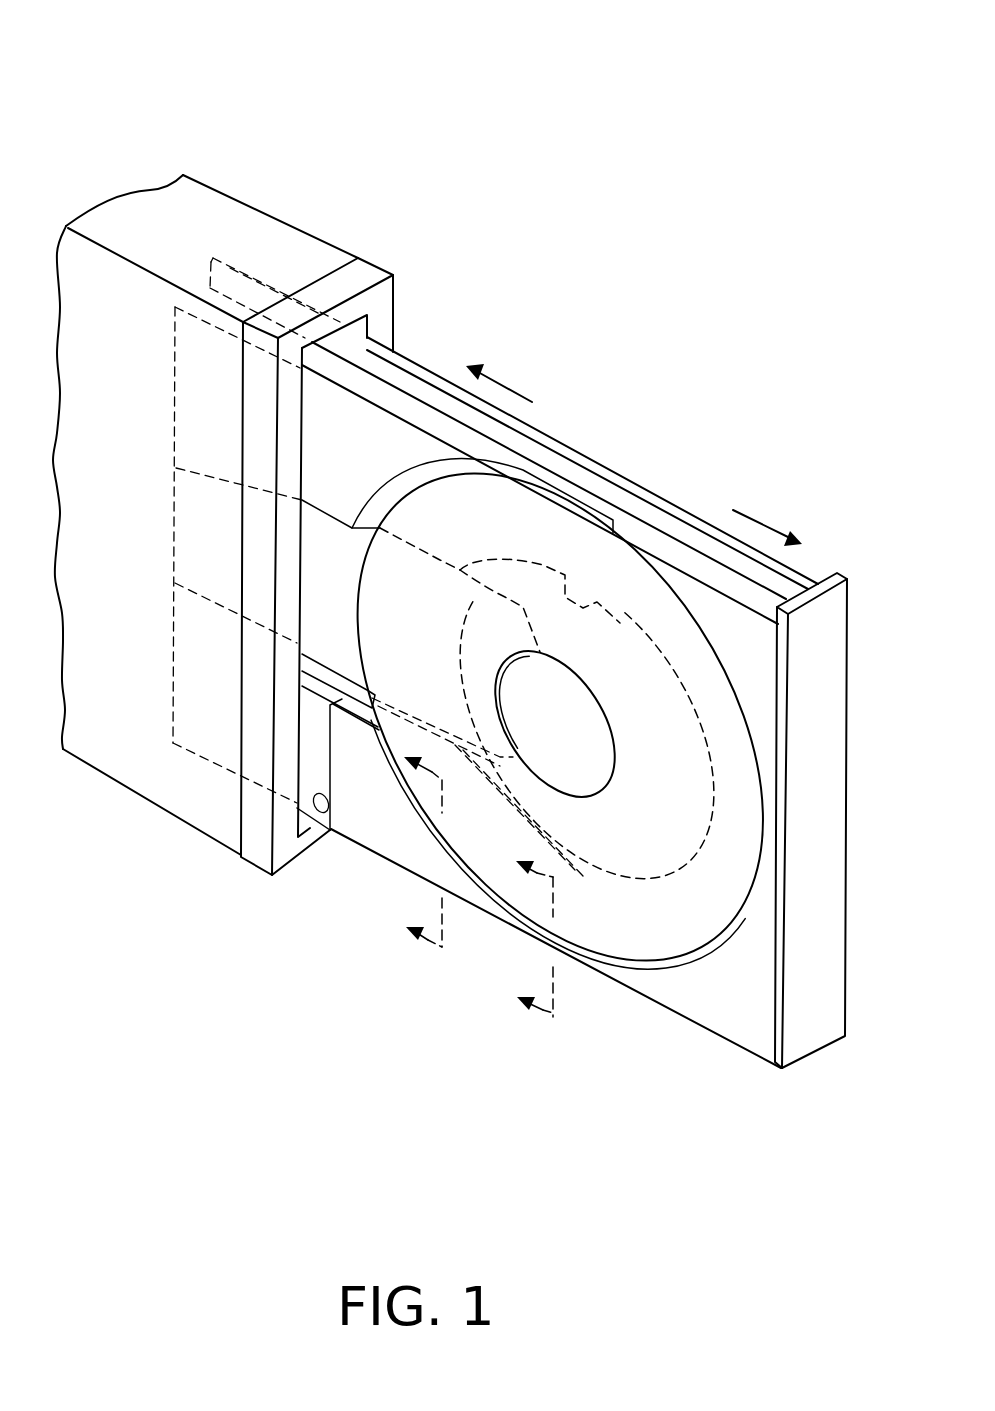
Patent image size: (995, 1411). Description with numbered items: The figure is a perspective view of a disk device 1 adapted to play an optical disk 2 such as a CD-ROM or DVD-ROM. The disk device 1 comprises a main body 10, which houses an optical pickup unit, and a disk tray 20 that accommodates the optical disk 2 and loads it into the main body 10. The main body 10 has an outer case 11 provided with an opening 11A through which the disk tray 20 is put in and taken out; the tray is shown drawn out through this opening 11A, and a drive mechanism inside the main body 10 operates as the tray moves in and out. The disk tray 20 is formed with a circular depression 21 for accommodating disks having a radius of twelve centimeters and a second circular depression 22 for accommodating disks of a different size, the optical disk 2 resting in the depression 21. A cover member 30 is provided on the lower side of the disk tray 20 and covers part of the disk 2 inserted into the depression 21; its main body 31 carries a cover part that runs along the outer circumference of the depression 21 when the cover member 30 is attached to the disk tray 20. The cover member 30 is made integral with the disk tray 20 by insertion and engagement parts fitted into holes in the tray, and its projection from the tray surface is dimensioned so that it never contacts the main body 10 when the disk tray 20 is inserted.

The disk device 1 is at (193, 120).
The main body 10 is at (283, 243).
The outer case 11 is at (120, 753).
The opening 11A is at (312, 829).
The optical disk 2 is at (722, 887).
The disk tray 20 is at (825, 672).
The circular depression 21 is at (418, 487).
The circular depression 22 is at (565, 575).
The cover member 30 is at (642, 983).
The main body 31 is at (725, 1017).